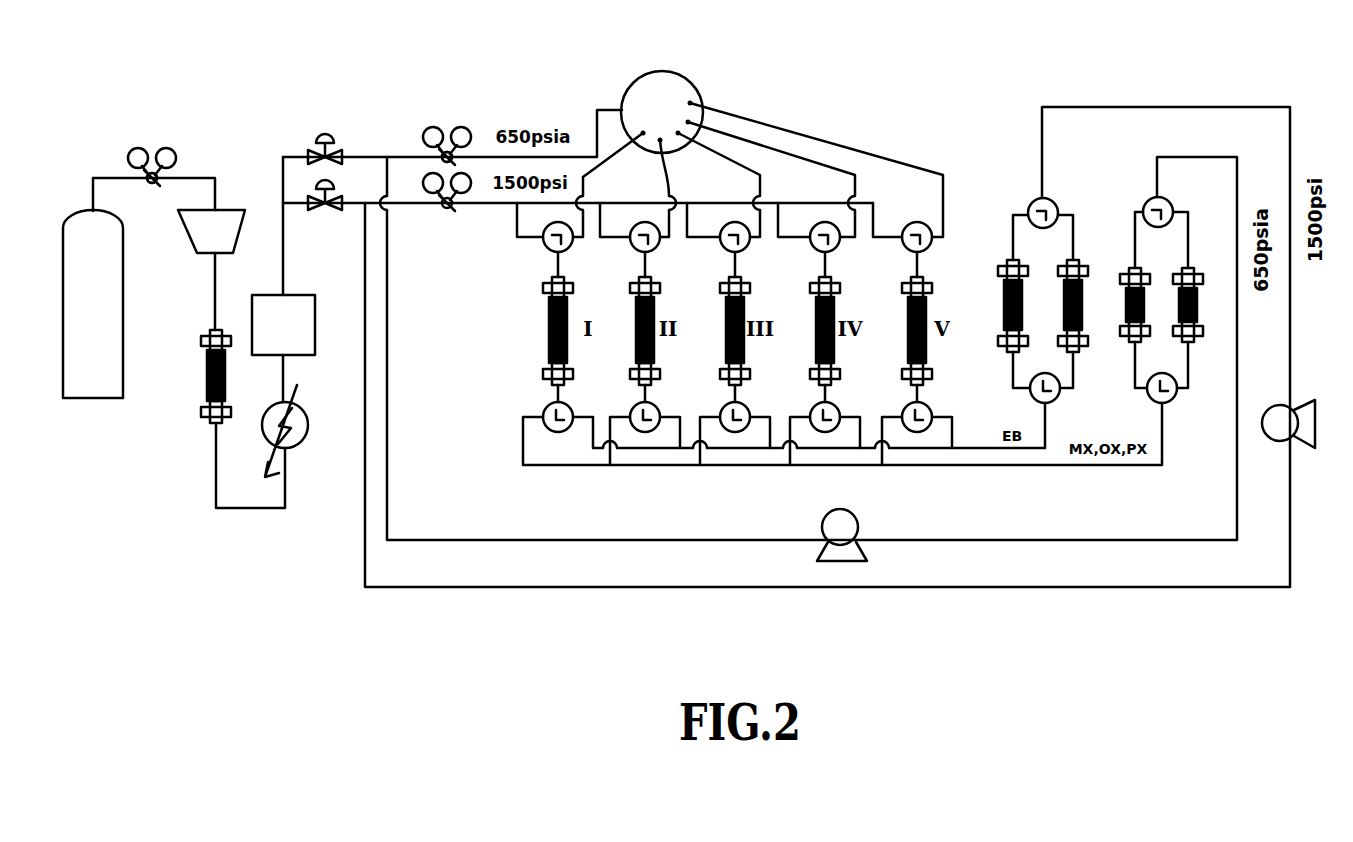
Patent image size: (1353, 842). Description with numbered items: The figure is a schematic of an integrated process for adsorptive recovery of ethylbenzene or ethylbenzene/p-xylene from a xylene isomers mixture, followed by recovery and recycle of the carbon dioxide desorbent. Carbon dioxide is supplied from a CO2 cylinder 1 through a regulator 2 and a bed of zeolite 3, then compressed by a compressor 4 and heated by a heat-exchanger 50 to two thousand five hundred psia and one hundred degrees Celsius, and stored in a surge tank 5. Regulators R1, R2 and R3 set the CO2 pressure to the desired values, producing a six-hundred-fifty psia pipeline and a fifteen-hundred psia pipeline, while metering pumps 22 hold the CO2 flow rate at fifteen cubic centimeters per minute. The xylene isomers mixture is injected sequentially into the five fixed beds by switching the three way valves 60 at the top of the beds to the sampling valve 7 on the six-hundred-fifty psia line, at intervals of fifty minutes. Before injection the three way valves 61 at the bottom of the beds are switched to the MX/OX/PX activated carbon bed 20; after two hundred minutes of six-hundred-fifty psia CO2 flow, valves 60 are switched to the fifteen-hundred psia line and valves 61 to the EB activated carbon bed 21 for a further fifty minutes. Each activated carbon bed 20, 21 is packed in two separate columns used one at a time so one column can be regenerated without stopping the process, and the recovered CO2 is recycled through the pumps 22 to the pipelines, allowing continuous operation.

The CO2 cylinder 1 is at (93, 304).
The regulator 2 is at (299, 152).
The zeolite 4A 3 is at (207, 376).
The compressor 4 is at (211, 231).
The surge tank 5 is at (283, 325).
The sampling valve 7 is at (671, 112).
The activated carbon bed 20 is at (1161, 300).
The activated carbon bed 21 is at (1043, 300).
The metering pump 22 is at (1049, 480).
The heat-exchanger 50 is at (304, 431).
The three way valve 60 is at (574, 246).
The three way valve 61 is at (545, 408).
The regulator R1 is at (152, 155).
The regulator R2 is at (431, 142).
The regulator R3 is at (431, 188).